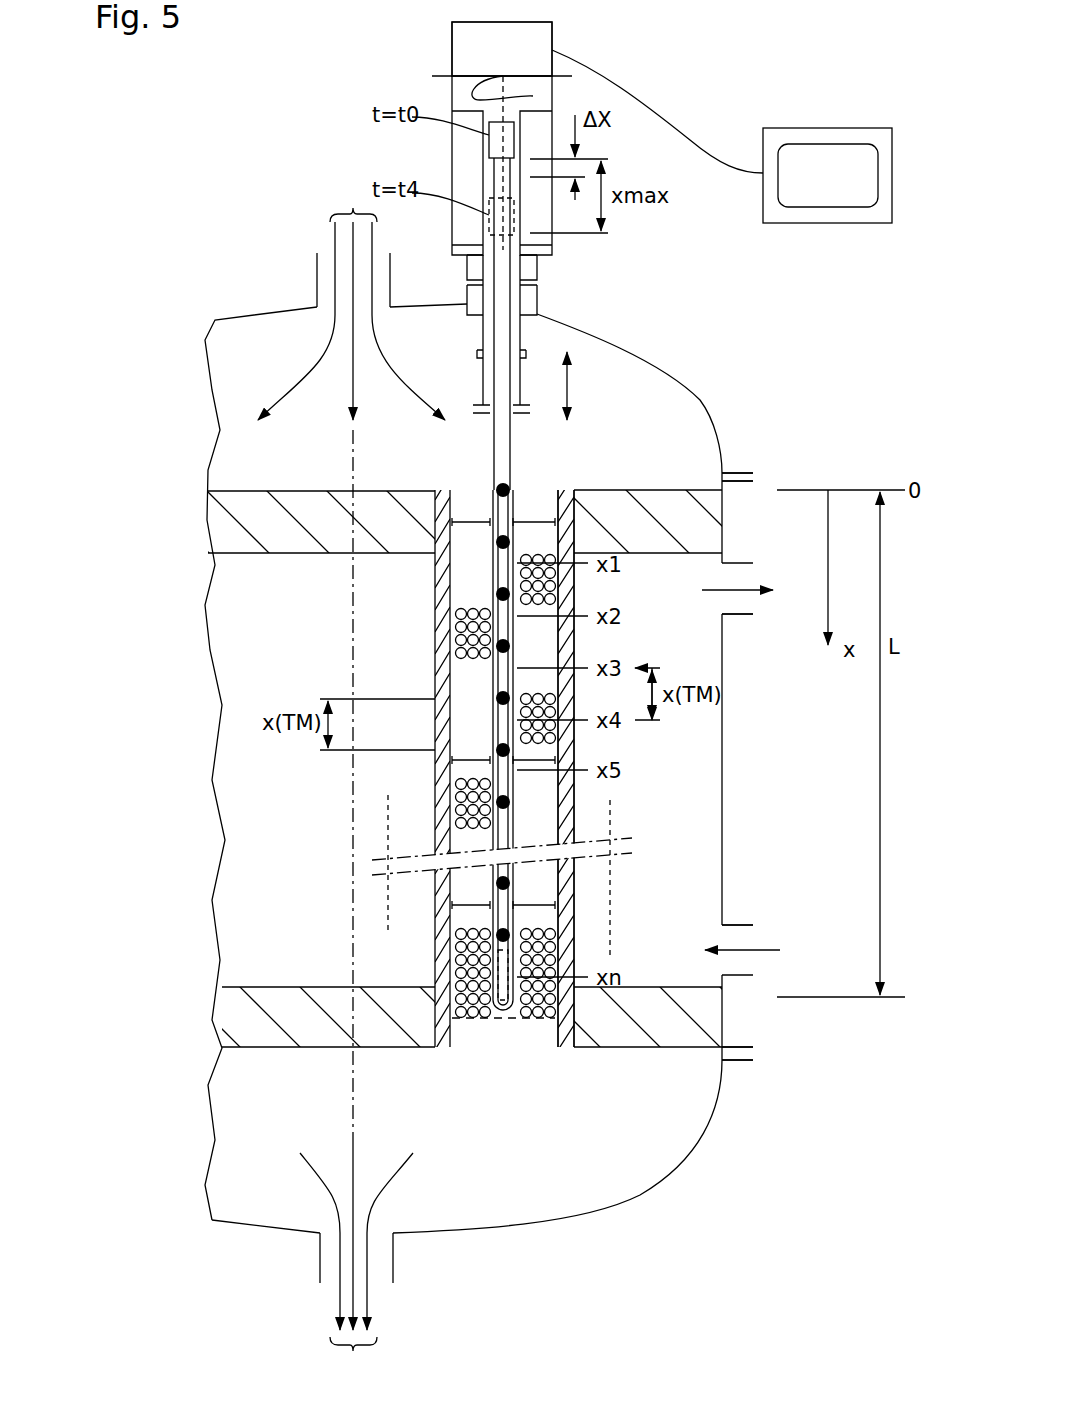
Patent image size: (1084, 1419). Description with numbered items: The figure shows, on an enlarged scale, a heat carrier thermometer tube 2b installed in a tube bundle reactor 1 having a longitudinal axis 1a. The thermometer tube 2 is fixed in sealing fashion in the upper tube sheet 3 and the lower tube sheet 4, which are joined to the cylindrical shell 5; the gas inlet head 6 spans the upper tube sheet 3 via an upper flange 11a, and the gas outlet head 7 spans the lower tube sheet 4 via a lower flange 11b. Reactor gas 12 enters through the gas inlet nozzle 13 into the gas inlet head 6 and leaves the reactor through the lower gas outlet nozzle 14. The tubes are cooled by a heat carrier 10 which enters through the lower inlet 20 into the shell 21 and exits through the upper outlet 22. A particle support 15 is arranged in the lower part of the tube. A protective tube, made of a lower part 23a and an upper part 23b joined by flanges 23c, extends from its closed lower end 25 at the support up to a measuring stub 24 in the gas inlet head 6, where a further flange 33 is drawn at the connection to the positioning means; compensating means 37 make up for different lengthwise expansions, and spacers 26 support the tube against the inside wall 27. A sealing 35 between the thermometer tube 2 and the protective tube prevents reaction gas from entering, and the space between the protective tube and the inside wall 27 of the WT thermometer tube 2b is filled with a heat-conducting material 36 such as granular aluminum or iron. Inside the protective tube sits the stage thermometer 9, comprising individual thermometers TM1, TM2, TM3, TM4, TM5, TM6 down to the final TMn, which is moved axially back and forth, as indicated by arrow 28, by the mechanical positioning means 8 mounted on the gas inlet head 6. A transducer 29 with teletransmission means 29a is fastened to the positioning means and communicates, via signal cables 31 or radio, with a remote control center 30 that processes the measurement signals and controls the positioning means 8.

The tube bundle reactor 1 is at (200, 222).
The longitudinal axis 1a is at (353, 472).
The thermometer tube 2 is at (564, 773).
The WT thermometer tube 2b is at (566, 768).
The upper tube sheet 3 is at (228, 522).
The lower tube sheet 4 is at (228, 1027).
The shell 5 is at (723, 850).
The gas inlet head 6 is at (668, 377).
The gas outlet head 7 is at (620, 1190).
The mechanical positioning means 8 is at (452, 163).
The stage thermometer 9 is at (514, 446).
The heat carrier 10 is at (745, 590).
The upper flange 11a is at (740, 473).
The lower flange 11b is at (745, 1062).
The reactor gas 12 is at (353, 210).
The gas inlet nozzle 13 is at (317, 290).
The gas outlet nozzle 14 is at (393, 1258).
The particle support 15 is at (458, 1020).
The lower inlet 20 is at (745, 925).
The shell 21 is at (668, 895).
The upper outlet 22 is at (735, 617).
The lower part of protective tube 23a is at (497, 474).
The upper part of protective tube 23b is at (483, 372).
The flanges 23c is at (483, 395).
The measuring stub 24 is at (520, 314).
The lower end 25 is at (500, 1020).
The spacers 26 is at (526, 491).
The inside wall 27 is at (560, 491).
The arrow 28 is at (540, 388).
The transducer 29 is at (537, 32).
The teletransmission means 29a is at (502, 49).
The control center 30 is at (830, 128).
The signal cables 31 is at (645, 100).
The flange 33 is at (520, 272).
The sealing 35 is at (548, 490).
The material 36 is at (575, 600).
The compensating means 37 is at (480, 352).
The first thermometer TM1 is at (503, 490).
The thermometer TM2 is at (503, 542).
The thermometer TM3 is at (503, 594).
The thermometer TM4 is at (503, 646).
The thermometer TM5 is at (503, 698).
The thermometer TM6 is at (503, 750).
The last thermometer TMn is at (503, 935).